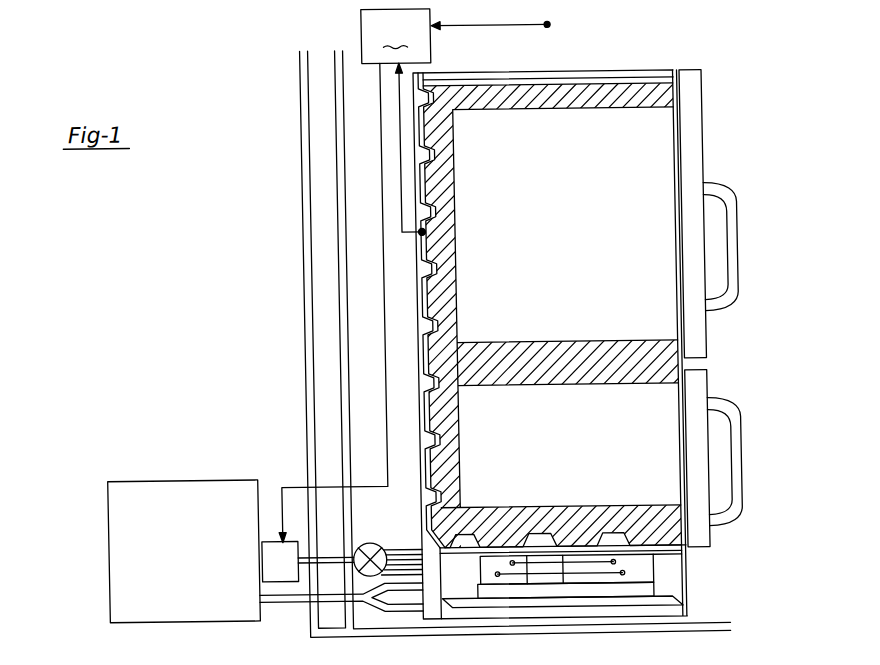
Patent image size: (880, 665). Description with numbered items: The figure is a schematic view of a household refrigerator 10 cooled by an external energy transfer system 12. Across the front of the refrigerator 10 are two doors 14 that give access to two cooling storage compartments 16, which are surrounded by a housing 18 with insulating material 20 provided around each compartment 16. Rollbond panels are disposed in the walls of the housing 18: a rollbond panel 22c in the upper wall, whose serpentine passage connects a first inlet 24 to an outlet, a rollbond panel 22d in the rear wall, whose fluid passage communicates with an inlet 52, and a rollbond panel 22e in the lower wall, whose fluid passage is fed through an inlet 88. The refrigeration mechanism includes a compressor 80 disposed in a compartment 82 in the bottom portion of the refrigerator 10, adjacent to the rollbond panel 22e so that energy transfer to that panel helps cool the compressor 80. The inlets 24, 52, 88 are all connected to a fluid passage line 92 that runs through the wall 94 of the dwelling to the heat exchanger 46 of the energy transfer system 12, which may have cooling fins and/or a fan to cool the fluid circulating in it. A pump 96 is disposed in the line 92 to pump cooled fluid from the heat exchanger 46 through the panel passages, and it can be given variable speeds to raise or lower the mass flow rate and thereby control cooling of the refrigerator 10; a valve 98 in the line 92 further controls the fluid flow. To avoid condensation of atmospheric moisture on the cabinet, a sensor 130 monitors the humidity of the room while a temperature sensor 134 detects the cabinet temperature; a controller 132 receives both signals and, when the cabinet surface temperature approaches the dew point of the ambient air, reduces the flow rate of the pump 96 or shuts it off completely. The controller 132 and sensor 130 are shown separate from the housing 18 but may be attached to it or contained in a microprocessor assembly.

The refrigerator 10 is at (737, 81).
The energy transfer system 12 is at (196, 346).
The door 14 is at (692, 158).
The cooling storage compartment 16 is at (513, 252).
The housing 18 is at (533, 76).
The insulating material 20 is at (607, 100).
The rollbond panel 22c is at (508, 76).
The rollbond panel 22d is at (422, 323).
The rollbond panel 22e is at (533, 604).
The first inlet 24 is at (440, 528).
The heat exchanger 46 is at (122, 496).
The inlet 52 is at (404, 549).
The compressor 80 is at (634, 575).
The compartment 82 is at (665, 559).
The inlet 88 is at (391, 572).
The fluid passage line 92 is at (320, 554).
The wall 94 is at (303, 189).
The pump 96 is at (263, 550).
The valve 98 is at (356, 543).
The sensor 130 is at (549, 26).
The controller 132 is at (354, 276).
The temperature sensor 134 is at (416, 234).